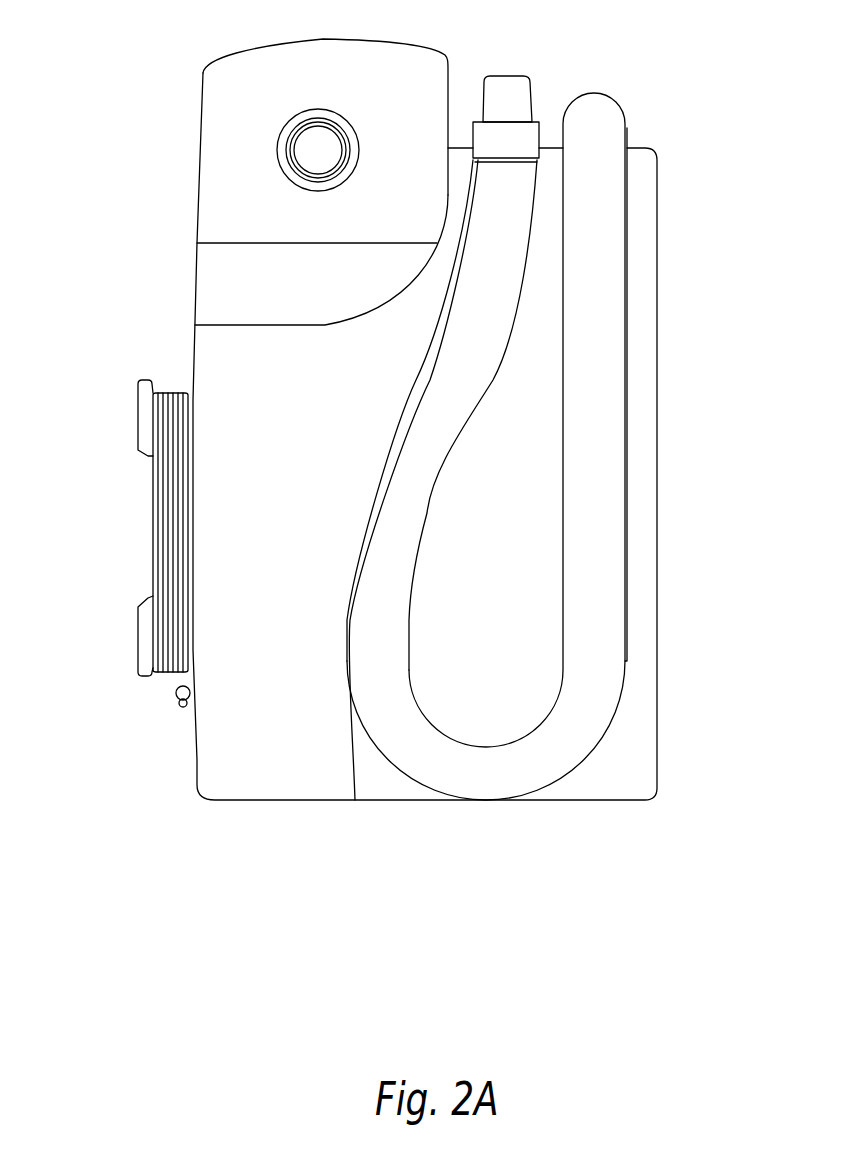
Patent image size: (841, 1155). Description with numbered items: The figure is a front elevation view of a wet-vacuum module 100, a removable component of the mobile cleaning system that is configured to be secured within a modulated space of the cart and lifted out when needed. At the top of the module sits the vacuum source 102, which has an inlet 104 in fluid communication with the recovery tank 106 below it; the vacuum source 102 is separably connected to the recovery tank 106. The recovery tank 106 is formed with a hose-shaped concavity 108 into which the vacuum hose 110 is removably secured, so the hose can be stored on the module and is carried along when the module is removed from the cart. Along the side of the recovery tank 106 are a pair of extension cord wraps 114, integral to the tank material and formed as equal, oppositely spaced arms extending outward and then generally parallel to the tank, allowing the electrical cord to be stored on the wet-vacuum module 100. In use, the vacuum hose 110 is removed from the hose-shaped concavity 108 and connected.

The wet-vacuum module 100 is at (626, 60).
The vacuum source 102 is at (215, 98).
The inlet 104 is at (312, 154).
The recovery tank 106 is at (213, 748).
The hose-shaped concavity 108 is at (410, 407).
The vacuum hose 110 is at (557, 770).
The extension cord wraps 114 is at (139, 404).